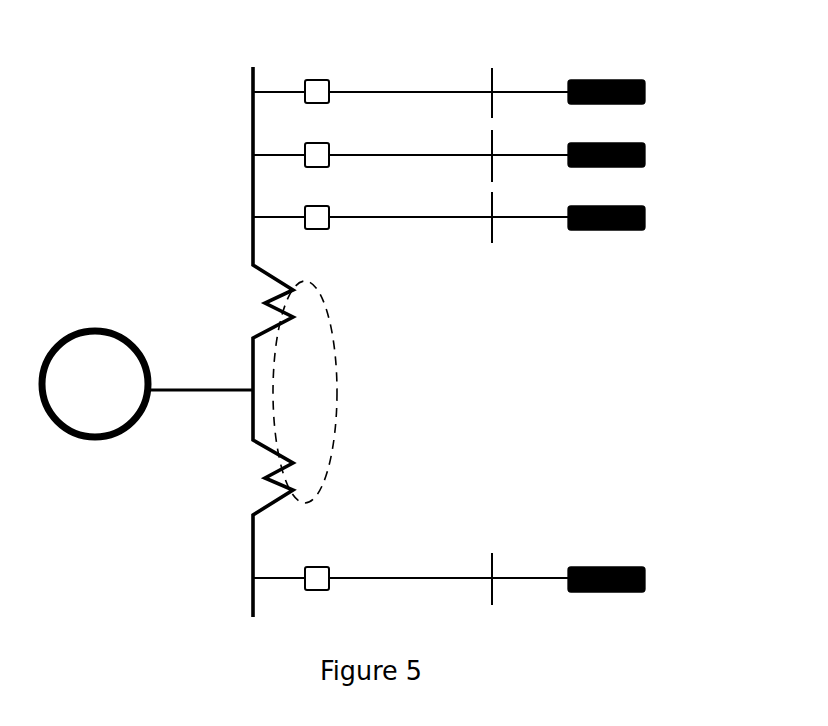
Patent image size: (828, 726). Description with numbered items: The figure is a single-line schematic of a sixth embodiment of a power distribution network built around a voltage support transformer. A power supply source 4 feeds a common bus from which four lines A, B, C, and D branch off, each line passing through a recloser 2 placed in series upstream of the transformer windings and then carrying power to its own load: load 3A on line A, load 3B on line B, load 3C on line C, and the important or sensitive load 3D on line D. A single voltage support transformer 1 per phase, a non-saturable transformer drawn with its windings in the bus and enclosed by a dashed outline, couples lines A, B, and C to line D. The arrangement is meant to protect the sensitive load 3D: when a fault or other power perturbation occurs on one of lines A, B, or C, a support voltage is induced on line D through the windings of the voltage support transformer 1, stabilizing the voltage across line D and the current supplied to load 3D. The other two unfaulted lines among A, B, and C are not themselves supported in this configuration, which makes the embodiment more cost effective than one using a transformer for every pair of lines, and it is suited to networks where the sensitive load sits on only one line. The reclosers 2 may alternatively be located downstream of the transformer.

The voltage support transformer (VST) 1 is at (349, 392).
The recloser 2 is at (313, 78).
The load on line A 3A is at (623, 78).
The load on line B 3B is at (623, 141).
The load on line C 3C is at (623, 204).
The sensitive load 3D is at (623, 565).
The power supply source 4 is at (147, 384).
The line A is at (428, 89).
The line B is at (428, 152).
The line C is at (428, 214).
The line D is at (440, 562).